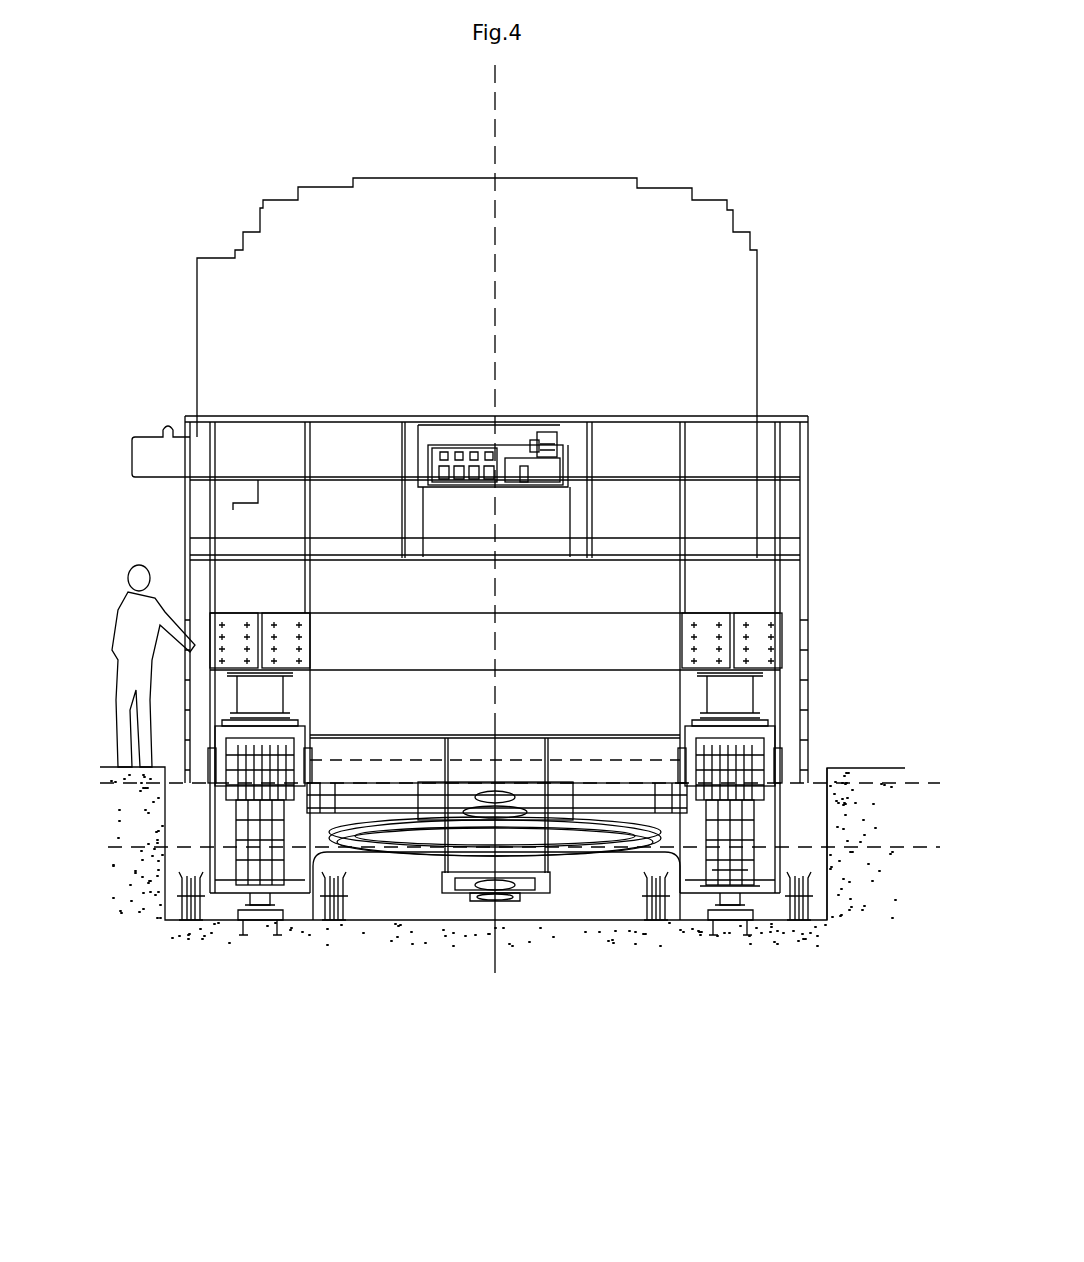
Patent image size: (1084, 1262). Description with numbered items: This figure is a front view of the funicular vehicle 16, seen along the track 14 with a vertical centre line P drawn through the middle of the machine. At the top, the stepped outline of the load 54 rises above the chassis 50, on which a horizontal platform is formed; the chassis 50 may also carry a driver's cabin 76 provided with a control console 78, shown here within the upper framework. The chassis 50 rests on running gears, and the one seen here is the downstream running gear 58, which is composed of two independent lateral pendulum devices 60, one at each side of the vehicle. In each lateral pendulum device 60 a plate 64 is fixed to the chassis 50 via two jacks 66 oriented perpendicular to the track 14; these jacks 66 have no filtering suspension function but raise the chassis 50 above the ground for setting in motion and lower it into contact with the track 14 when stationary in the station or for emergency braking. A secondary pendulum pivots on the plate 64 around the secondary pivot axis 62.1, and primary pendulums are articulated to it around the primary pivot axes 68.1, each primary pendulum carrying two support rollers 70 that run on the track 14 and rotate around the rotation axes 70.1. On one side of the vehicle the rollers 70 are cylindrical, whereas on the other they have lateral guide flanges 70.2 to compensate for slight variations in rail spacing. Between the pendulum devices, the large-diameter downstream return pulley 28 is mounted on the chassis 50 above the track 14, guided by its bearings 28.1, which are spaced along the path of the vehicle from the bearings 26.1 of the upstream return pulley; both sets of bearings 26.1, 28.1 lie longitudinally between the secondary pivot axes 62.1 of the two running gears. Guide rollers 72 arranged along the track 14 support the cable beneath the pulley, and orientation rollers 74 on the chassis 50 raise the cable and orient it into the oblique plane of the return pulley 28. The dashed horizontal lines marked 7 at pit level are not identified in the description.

The axis P is at (495, 105).
The load 54 is at (690, 240).
The control console 78 is at (545, 436).
The driver's cabin 76 is at (762, 420).
The vehicle 16 is at (829, 489).
The chassis 50 is at (770, 632).
The jacks 66 is at (270, 690).
The plate 64 is at (310, 727).
The support rollers 70 is at (730, 808).
The lateral guide flanges 70.2 is at (718, 895).
The track 14 is at (268, 903).
The secondary pivot axis 62.1 is at (372, 758).
The orientation rollers 74 is at (673, 828).
The downstream return pulley 28 is at (410, 852).
The bearings of the downstream return pulley 28.1 is at (497, 802).
The bearings of the upstream return pulley 26.1 is at (507, 895).
The rotation axes of the support rollers 70.1 is at (883, 877).
The section line 7 is at (509, 823).
The primary pivot axes 68.1 is at (820, 723).
The downstream running gear 58 is at (856, 739).
The lateral pendulum device 60 is at (180, 869).
The guide rollers 72 is at (182, 896).